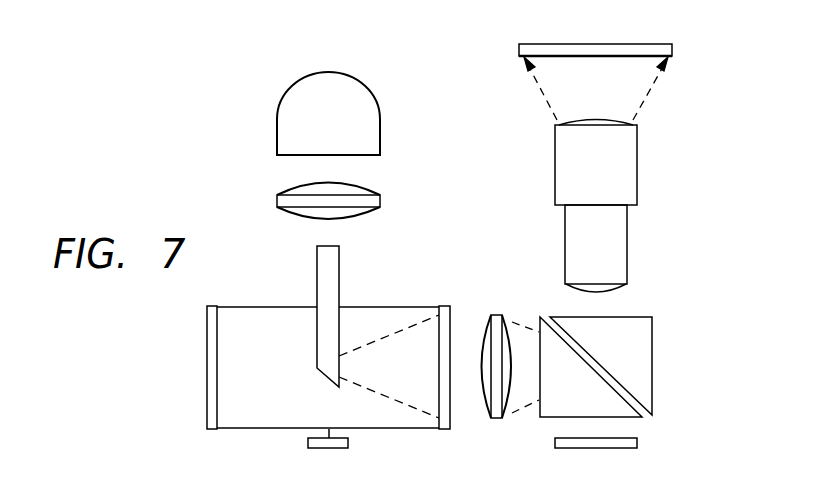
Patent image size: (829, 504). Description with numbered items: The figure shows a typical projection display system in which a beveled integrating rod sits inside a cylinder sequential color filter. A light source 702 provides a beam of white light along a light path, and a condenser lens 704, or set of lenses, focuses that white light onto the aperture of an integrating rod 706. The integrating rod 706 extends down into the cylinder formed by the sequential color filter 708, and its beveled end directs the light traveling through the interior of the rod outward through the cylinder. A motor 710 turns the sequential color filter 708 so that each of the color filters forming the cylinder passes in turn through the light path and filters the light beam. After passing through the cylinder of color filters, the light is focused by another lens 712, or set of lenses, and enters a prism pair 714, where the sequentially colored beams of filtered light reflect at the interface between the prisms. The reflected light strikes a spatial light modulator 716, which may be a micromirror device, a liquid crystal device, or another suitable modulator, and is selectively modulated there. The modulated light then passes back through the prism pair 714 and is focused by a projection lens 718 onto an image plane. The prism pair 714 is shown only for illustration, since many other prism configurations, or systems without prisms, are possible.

The light source 702 is at (277, 128).
The condenser lens 704 is at (277, 200).
The integrating rod 706 is at (317, 276).
The sequential color filter 708 is at (207, 365).
The motor 710 is at (308, 443).
The lens 712 is at (497, 418).
The prism pair 714 is at (652, 366).
The spatial light modulator 716 is at (637, 443).
The projection lens 718 is at (637, 173).